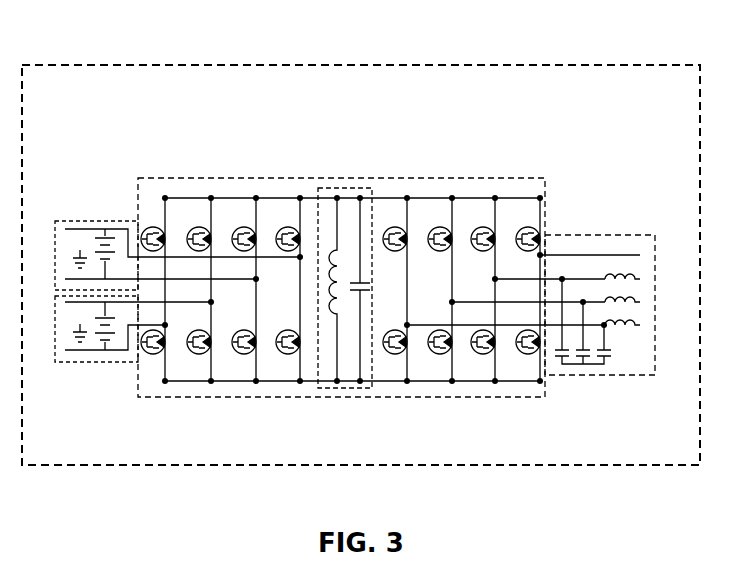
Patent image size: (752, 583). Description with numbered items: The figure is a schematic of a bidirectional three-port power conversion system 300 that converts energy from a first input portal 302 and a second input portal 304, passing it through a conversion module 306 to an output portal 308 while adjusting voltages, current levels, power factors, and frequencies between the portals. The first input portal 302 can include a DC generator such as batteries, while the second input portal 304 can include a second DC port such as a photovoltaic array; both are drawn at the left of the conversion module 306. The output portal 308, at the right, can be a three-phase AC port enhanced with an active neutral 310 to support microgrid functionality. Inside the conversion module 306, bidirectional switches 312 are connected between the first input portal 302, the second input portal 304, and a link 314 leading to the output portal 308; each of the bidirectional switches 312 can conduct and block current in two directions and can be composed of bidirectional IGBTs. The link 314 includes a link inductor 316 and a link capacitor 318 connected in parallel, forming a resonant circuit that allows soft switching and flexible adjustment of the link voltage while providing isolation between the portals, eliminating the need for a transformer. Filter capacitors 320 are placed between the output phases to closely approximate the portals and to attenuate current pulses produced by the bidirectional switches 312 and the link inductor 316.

The three-port power conversion system 300 is at (152, 88).
The first input portal 302 is at (55, 221).
The second input portal 304 is at (52, 370).
The conversion module 306 is at (342, 178).
The output portal 308 is at (658, 235).
The active neutral 310 is at (565, 253).
The bidirectional switches 312 is at (242, 225).
The link 314 is at (318, 386).
The link inductor 316 is at (326, 248).
The link capacitor 318 is at (373, 318).
The filter capacitors 320 is at (606, 362).